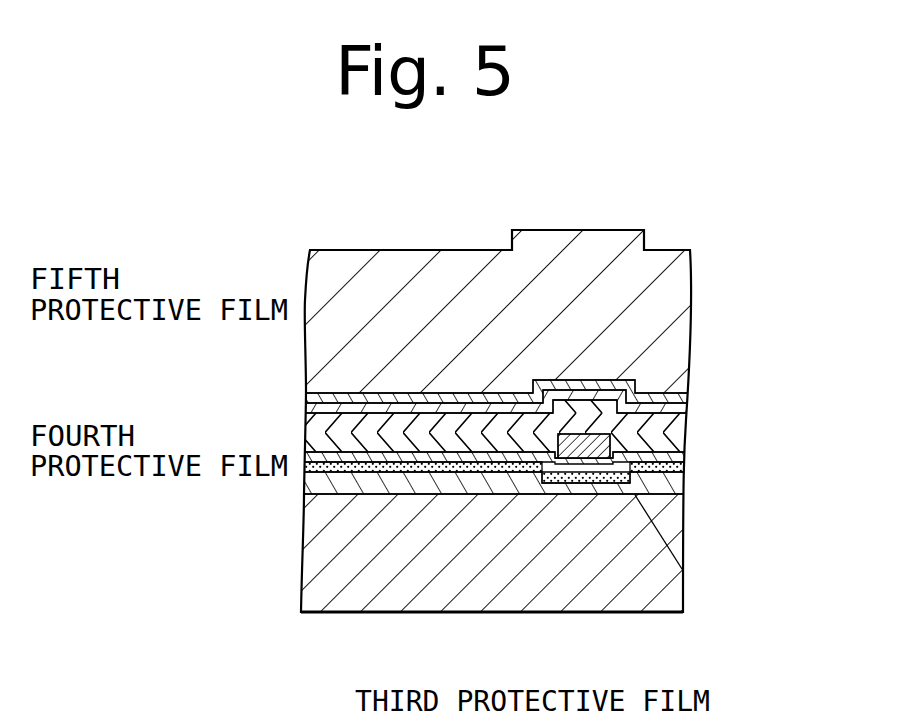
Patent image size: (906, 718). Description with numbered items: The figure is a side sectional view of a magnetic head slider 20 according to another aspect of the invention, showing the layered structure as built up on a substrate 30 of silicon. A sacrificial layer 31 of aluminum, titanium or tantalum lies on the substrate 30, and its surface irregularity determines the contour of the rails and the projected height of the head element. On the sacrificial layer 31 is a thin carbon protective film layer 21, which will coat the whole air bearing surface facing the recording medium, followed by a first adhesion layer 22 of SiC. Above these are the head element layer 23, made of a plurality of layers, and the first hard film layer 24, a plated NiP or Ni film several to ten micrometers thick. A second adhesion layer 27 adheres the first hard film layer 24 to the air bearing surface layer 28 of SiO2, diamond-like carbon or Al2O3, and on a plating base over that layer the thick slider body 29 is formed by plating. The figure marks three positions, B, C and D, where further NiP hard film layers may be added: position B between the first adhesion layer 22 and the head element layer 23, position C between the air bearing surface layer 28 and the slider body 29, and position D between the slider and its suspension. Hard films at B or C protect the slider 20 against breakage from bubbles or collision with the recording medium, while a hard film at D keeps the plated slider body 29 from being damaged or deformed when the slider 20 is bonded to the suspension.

The magnetic head slider 20 is at (760, 330).
The protective film layer 21 is at (686, 517).
The first adhesion layer 22 is at (673, 470).
The head element layer 23 is at (668, 457).
The first hard film layer 24 is at (611, 436).
The second adhesion layer 27 is at (686, 413).
The air bearing surface layer 28 is at (686, 397).
The slider body 29 is at (673, 367).
The substrate 30 is at (665, 612).
The sacrificial layer 31 is at (650, 583).
The position B is at (577, 464).
The position C is at (308, 393).
The position D is at (308, 247).